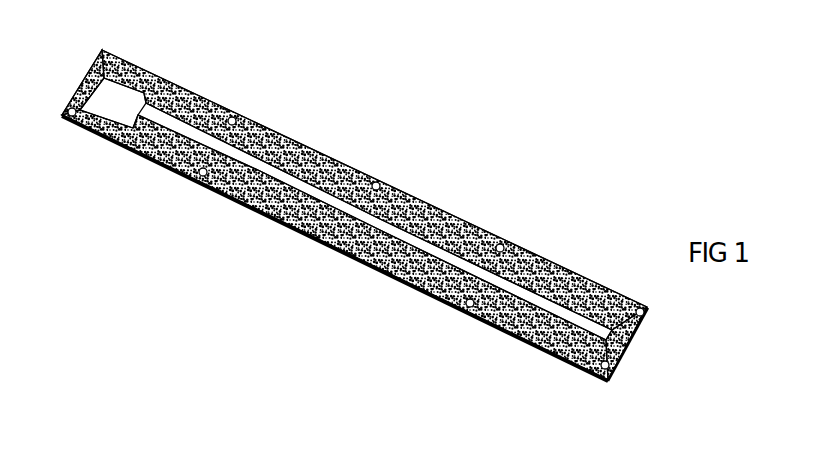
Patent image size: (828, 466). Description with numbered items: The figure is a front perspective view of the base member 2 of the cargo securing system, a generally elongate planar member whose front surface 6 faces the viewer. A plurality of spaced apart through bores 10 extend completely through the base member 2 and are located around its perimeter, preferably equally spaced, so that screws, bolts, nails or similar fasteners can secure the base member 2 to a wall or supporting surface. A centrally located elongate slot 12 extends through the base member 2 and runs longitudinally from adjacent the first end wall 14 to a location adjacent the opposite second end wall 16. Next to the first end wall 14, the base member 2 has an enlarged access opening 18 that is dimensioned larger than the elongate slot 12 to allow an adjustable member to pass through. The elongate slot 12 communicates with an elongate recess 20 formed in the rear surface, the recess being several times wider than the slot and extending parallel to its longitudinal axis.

The base member 2 is at (467, 192).
The front surface 6 is at (535, 263).
The through bores 10 is at (237, 119).
The elongate slot 12 is at (288, 181).
The first end wall 14 is at (79, 84).
The second end wall 16 is at (633, 344).
The enlarged access opening 18 is at (117, 102).
The elongate recess 20 is at (318, 193).